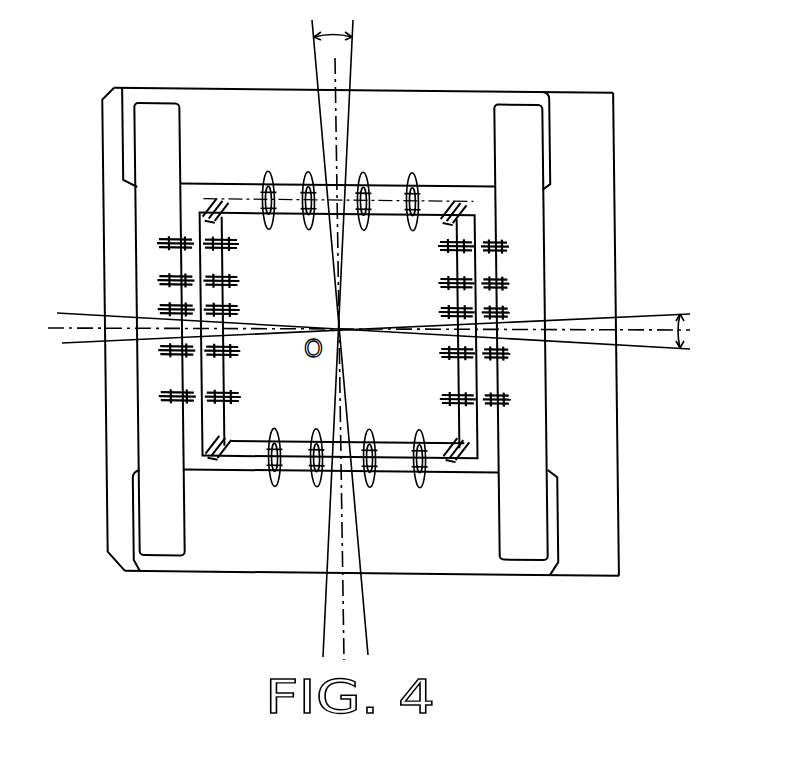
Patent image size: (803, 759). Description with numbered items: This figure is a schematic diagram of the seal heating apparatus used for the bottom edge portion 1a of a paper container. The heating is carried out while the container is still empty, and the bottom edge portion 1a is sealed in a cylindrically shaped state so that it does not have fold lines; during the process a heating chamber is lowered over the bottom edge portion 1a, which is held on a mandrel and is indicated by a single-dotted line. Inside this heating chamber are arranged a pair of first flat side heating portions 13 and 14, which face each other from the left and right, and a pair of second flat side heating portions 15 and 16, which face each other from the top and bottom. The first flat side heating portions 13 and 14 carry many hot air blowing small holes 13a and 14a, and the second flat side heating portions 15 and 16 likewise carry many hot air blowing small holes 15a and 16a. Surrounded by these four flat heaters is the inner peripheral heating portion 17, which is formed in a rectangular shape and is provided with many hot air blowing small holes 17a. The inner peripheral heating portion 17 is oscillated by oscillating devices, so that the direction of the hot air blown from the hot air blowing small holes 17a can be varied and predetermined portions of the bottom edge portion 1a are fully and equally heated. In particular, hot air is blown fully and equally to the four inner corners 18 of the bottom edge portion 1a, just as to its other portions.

The bottom edge portion 1a is at (542, 433).
The first flat side heating portion 13 is at (140, 252).
The hot air blowing small holes 13a is at (160, 398).
The first flat side heating portion 14 is at (525, 285).
The hot air blowing small holes 14a is at (515, 397).
The second flat side heating portion 15 is at (437, 93).
The hot air blowing small holes 15a is at (365, 178).
The second flat side heating portion 16 is at (432, 577).
The hot air blowing small holes 16a is at (372, 478).
The inner peripheral heating portion 17 is at (405, 285).
The hot air blowing small holes 17a is at (367, 430).
The inner corners 18 is at (467, 208).